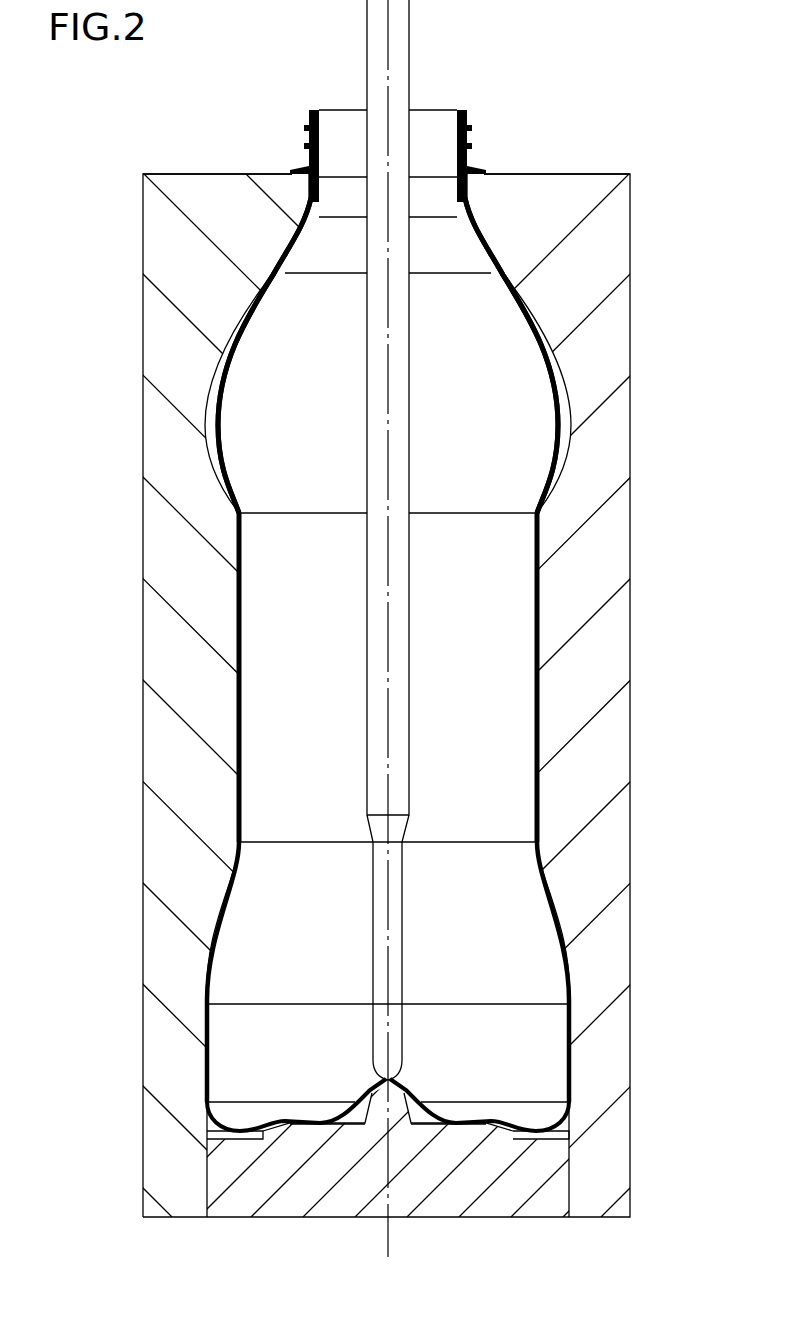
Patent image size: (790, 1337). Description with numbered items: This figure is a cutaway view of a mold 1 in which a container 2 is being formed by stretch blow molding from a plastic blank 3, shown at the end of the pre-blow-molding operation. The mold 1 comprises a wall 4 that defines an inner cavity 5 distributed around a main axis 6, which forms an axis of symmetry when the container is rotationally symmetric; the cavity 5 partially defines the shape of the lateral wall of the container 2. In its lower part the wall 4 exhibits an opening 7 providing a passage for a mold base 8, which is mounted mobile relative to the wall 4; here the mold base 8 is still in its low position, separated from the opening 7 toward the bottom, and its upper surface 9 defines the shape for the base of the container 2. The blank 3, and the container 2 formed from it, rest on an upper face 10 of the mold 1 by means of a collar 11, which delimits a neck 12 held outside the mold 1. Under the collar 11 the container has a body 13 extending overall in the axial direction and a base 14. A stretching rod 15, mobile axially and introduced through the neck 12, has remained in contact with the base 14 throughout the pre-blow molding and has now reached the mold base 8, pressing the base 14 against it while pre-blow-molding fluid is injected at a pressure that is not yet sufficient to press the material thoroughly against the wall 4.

The mold 1 is at (632, 222).
The container 2 is at (558, 459).
The blank 3 is at (566, 461).
The wall 4 is at (614, 323).
The inner cavity 5 is at (560, 398).
The main axis 6 is at (389, 413).
The opening 7 is at (208, 1182).
The mold base 8 is at (341, 1200).
The upper surface 9 is at (458, 1126).
The upper face 10 is at (573, 174).
The collar 11 is at (476, 167).
The neck 12 is at (464, 112).
The body 13 is at (535, 648).
The base 14 is at (497, 1126).
The stretching rod 15 is at (393, 952).